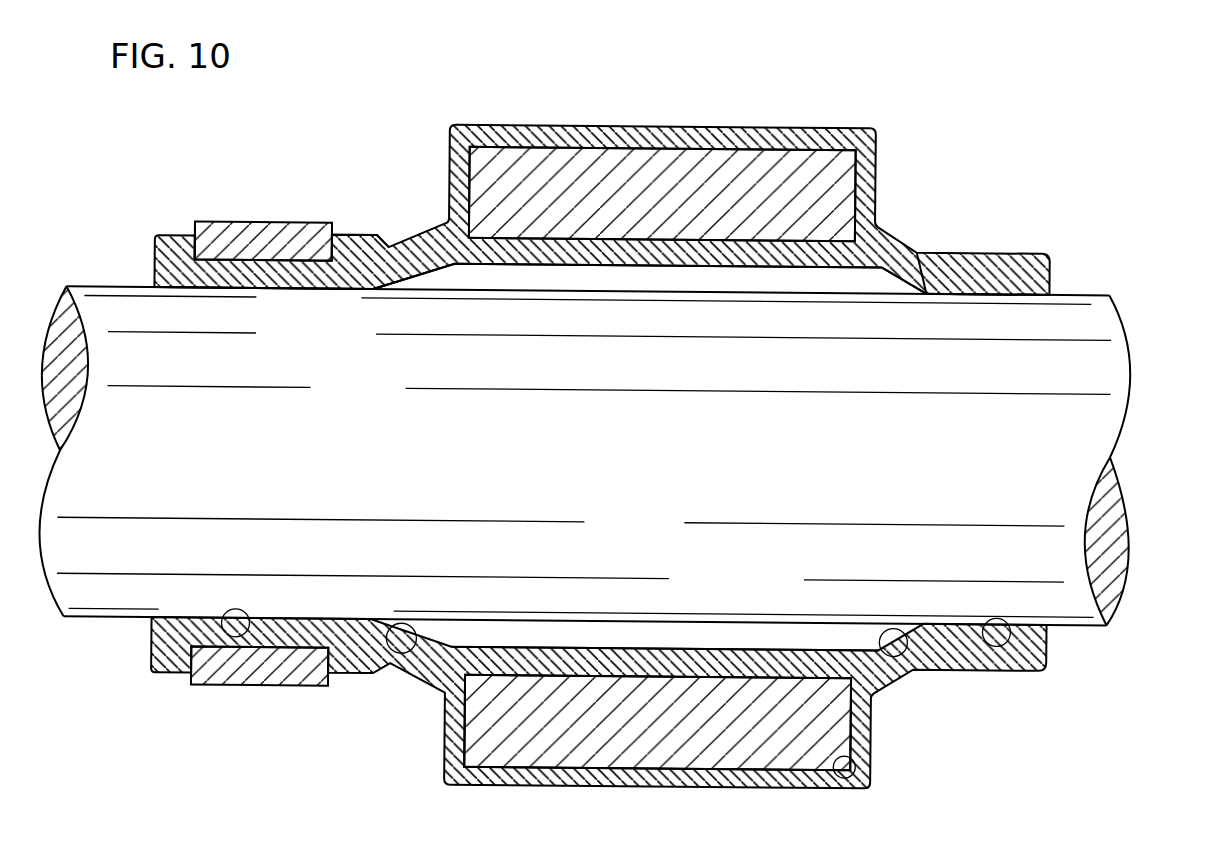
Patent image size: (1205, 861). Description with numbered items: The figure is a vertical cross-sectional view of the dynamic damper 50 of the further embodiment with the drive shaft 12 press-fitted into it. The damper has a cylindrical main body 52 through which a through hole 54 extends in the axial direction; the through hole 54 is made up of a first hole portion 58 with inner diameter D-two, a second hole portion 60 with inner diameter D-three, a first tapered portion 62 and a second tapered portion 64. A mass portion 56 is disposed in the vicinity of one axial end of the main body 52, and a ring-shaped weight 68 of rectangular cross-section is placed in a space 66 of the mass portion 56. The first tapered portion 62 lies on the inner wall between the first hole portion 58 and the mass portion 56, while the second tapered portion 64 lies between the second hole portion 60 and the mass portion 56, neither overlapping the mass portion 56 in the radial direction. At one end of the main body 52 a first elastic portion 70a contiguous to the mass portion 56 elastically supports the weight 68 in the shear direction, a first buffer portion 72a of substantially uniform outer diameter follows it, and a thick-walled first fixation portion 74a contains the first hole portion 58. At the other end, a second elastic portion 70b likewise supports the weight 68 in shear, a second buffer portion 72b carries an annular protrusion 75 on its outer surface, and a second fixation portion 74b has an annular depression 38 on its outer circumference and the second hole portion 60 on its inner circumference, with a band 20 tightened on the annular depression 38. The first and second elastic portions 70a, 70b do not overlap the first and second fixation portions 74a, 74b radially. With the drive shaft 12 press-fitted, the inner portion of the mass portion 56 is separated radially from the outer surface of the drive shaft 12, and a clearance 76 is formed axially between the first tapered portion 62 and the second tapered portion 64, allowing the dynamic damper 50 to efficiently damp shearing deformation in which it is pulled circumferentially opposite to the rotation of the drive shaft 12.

The drive shaft 12 is at (1112, 545).
The band 20 is at (258, 250).
The annular depression 38 is at (200, 226).
The dynamic damper 50 is at (630, 456).
The main body 52 is at (908, 232).
The through hole 54 is at (575, 685).
The mass portion 56 is at (745, 125).
The first hole portion 58 is at (1000, 665).
The second hole portion 60 is at (231, 688).
The first tapered portion 62 is at (900, 663).
The second tapered portion 64 is at (406, 665).
The space 66 is at (875, 778).
The weight 68 is at (706, 735).
The first elastic portion 70a is at (903, 283).
The second elastic portion 70b is at (440, 277).
The first buffer portion 72a is at (948, 289).
The second buffer portion 72b is at (385, 280).
The first fixation portion 74a is at (1000, 289).
The second fixation portion 74b is at (267, 284).
The annular protrusion 75 is at (352, 239).
The clearance 76 is at (627, 278).